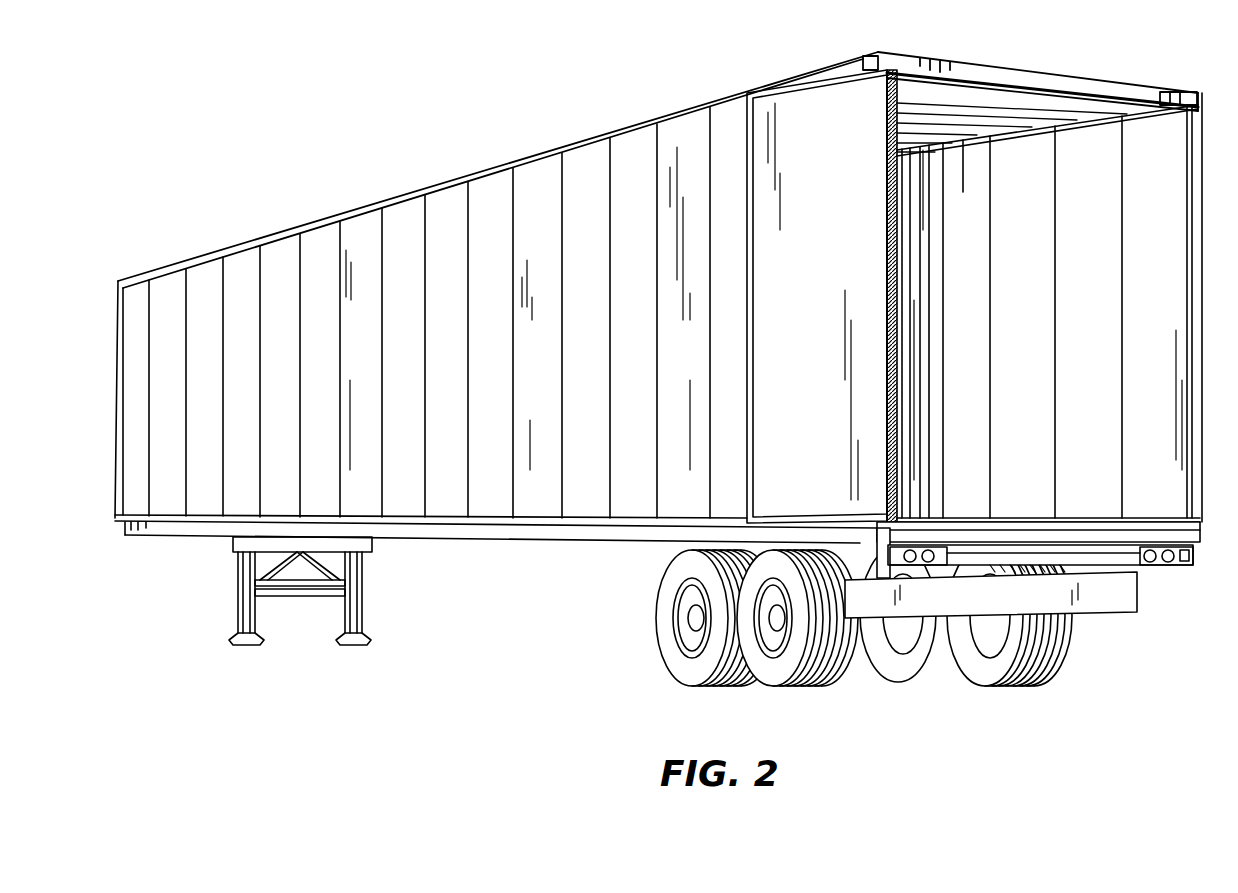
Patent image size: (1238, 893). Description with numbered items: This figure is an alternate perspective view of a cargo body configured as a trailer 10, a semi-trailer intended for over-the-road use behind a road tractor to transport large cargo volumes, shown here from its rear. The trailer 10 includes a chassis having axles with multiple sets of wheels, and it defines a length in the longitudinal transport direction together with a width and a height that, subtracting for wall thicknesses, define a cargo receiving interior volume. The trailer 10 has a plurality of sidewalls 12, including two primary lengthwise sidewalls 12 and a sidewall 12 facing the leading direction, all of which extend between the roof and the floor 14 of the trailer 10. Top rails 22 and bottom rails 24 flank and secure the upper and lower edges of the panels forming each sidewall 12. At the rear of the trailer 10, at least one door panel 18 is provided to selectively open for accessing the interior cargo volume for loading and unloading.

The trailer 10 is at (360, 110).
The sidewall 12 is at (625, 195).
The floor 14 is at (1027, 512).
The door panel 18 is at (819, 379).
The top rail 22 is at (272, 235).
The bottom rail 24 is at (495, 518).